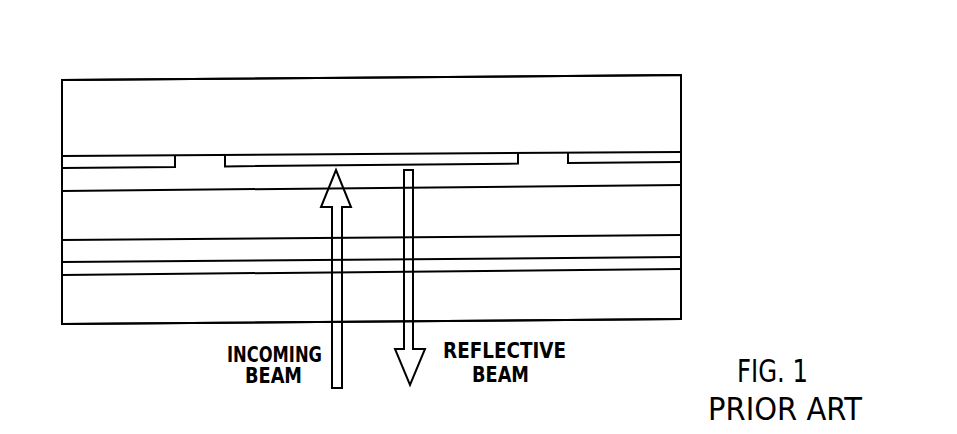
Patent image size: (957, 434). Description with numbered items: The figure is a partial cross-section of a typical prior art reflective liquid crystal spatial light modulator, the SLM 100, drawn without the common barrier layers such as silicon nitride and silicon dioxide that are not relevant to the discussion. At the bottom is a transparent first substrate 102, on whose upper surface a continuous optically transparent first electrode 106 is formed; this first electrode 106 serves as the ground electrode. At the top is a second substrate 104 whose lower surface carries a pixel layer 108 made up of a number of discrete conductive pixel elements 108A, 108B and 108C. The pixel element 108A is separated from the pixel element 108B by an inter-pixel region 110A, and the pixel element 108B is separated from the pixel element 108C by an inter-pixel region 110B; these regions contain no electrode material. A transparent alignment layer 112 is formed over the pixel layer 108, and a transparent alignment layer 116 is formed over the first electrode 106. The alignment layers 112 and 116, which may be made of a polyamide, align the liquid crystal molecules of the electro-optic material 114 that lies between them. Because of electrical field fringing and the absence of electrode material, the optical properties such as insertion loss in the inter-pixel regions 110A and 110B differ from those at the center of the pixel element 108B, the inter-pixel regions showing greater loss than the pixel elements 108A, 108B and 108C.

The spatial light modulator 100 is at (763, 53).
The first substrate 102 is at (681, 296).
The second substrate 104 is at (681, 78).
The first electrode 106 is at (681, 262).
The pixel layer 108 is at (393, 100).
The pixel element 108A is at (636, 152).
The pixel element 108B is at (343, 155).
The pixel element 108C is at (113, 155).
The inter-pixel region 110A is at (548, 152).
The inter-pixel region 110B is at (205, 153).
The alignment layer 112 is at (681, 175).
The electro-optic material 114 is at (55, 192).
The alignment layer 116 is at (681, 243).